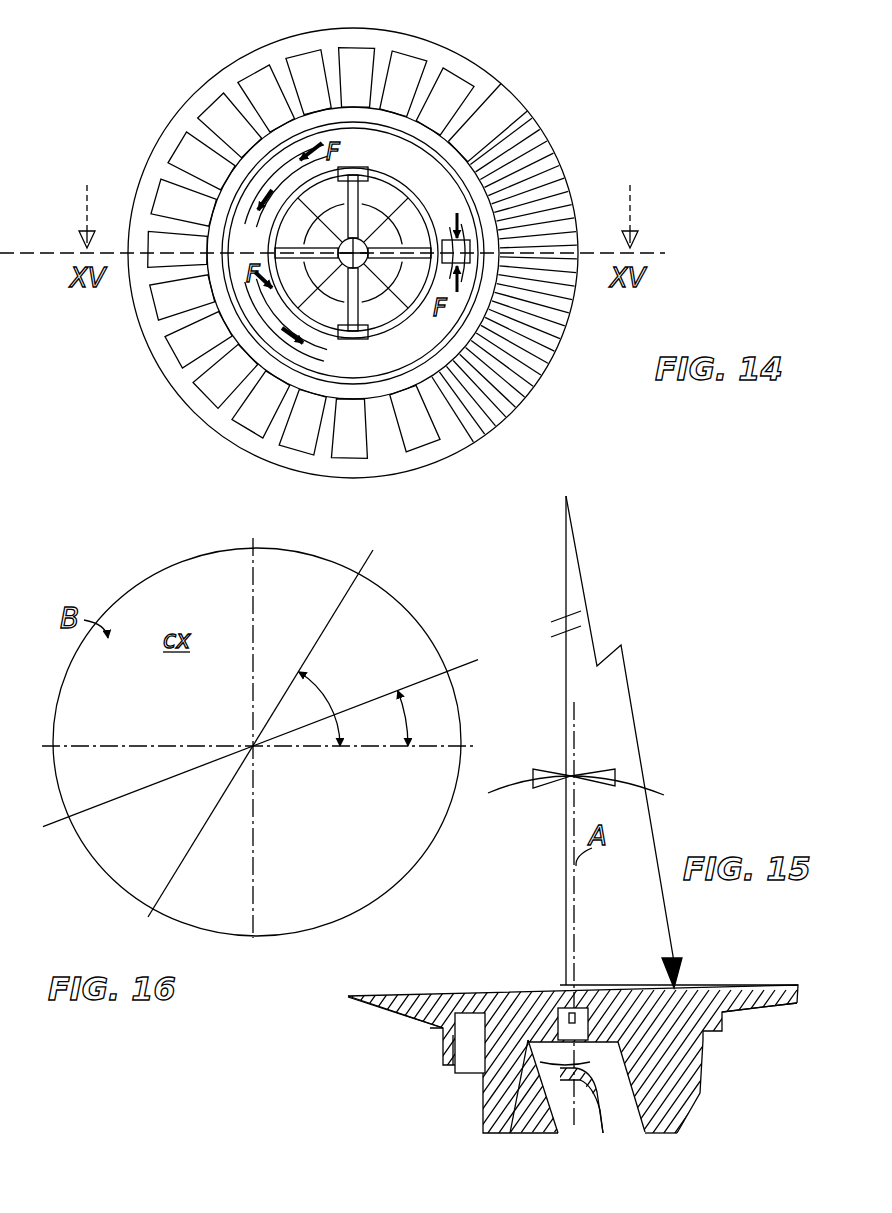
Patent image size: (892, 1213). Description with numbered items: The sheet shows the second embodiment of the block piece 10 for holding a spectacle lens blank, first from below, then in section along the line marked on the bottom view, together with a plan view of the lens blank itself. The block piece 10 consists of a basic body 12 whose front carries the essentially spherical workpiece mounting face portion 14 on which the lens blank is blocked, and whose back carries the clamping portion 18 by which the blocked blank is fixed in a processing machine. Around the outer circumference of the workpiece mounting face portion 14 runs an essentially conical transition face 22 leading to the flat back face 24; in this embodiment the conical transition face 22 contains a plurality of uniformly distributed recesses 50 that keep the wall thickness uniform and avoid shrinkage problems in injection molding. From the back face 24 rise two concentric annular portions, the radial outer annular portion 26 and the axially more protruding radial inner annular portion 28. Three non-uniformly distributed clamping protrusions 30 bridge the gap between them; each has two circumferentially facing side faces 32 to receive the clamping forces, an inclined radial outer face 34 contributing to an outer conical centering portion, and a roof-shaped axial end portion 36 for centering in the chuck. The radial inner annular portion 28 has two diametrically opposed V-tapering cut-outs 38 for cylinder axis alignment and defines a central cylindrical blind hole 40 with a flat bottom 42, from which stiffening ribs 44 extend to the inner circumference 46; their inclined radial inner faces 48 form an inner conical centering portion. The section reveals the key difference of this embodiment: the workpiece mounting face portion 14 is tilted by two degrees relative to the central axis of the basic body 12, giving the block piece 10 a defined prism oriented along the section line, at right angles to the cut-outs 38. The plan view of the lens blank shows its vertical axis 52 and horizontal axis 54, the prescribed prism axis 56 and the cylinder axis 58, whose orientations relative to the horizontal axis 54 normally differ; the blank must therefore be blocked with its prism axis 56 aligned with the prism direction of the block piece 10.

In FIG. 14, the block piece 10 is at (212, 72).
In FIG. 15, the block piece 10 is at (752, 980).
In FIG. 14, the basic body 12 is at (167, 332).
In FIG. 15, the basic body 12 is at (440, 1015).
In FIG. 15, the workpiece mounting face portion 14 is at (620, 988).
In FIG. 14, the clamping portion 18 is at (170, 383).
In FIG. 15, the clamping portion 18 is at (690, 1114).
In FIG. 14, the conical transition face 22 is at (155, 195).
In FIG. 15, the conical transition face 22 is at (370, 1010).
In FIG. 14, the back face 24 is at (217, 232).
In FIG. 15, the back face 24 is at (708, 1040).
In FIG. 14, the radial outer annular portion 26 is at (267, 158).
In FIG. 15, the radial outer annular portion 26 is at (455, 1073).
In FIG. 14, the radial inner annular portion 28 is at (273, 150).
In FIG. 15, the radial inner annular portion 28 is at (527, 1133).
In FIG. 14, the clamping protrusion 30 is at (227, 110).
In FIG. 15, the clamping protrusion 30 is at (655, 1137).
In FIG. 14, the side face 32 is at (487, 193).
In FIG. 14, the radial outer face 34 is at (352, 267).
In FIG. 15, the radial outer face 34 is at (693, 1100).
In FIG. 14, the axial end portion 36 is at (453, 235).
In FIG. 14, the cut-out 38 is at (344, 172).
In FIG. 15, the cut-out 38 is at (590, 1103).
In FIG. 14, the central cylindrical blind hole 40 is at (495, 87).
In FIG. 15, the central cylindrical blind hole 40 is at (507, 1117).
In FIG. 14, the bottom 42 is at (480, 68).
In FIG. 15, the bottom 42 is at (550, 1040).
In FIG. 15, the stiffening rib 44 is at (523, 1060).
In FIG. 14, the inner circumference 46 is at (460, 410).
In FIG. 15, the inner circumference 46 is at (540, 1097).
In FIG. 14, the radial inner face 48 is at (386, 230).
In FIG. 15, the radial inner face 48 is at (623, 1107).
In FIG. 14, the recess 50 is at (380, 478).
In FIG. 15, the recess 50 is at (413, 1020).
In FIG. 16, the vertical axis 52 is at (256, 640).
In FIG. 16, the horizontal axis 54 is at (165, 745).
In FIG. 16, the prism axis 56 is at (336, 612).
In FIG. 16, the cylinder axis 58 is at (413, 684).